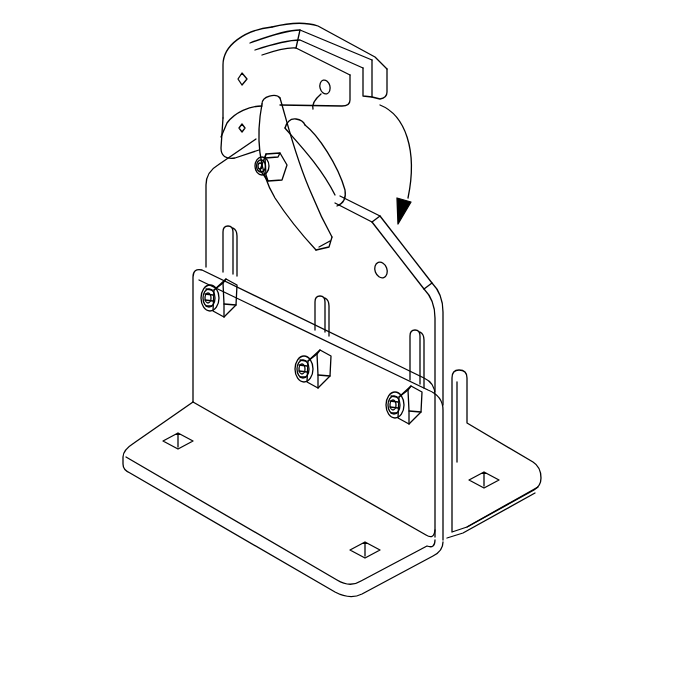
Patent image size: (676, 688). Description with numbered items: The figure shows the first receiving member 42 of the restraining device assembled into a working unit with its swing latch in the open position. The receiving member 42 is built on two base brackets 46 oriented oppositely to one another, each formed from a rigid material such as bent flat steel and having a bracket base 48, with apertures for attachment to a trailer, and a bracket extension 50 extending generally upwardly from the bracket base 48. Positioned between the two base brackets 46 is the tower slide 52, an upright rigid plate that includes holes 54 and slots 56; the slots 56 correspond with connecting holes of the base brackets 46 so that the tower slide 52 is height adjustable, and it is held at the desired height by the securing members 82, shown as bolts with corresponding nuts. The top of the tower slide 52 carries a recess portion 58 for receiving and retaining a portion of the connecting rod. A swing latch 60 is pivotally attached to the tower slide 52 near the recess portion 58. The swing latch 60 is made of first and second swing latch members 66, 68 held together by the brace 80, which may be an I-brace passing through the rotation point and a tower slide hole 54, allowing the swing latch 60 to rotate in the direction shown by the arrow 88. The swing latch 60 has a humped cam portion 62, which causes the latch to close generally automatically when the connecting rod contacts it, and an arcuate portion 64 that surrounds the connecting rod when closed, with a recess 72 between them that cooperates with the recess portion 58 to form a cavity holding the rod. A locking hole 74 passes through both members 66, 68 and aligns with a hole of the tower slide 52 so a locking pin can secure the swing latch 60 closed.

The first receiving member 42 is at (486, 70).
The base brackets 46 is at (294, 483).
The bracket base 48 is at (200, 433).
The bracket extension 50 is at (205, 342).
The tower slide 52 is at (286, 272).
The holes 54 is at (375, 273).
The slots 56 is at (230, 252).
The recess portion 58 is at (327, 192).
The swing latch 60 is at (302, 125).
The cam portion 62 is at (330, 160).
The arcuate portion 64 is at (247, 43).
The first swing latch member 66 is at (232, 91).
The second swing latch member 68 is at (384, 60).
The recess 72 is at (239, 128).
The locking hole 74 is at (310, 102).
The brace 80 is at (258, 173).
The securing members 82 is at (202, 307).
The arrow 88 is at (411, 143).